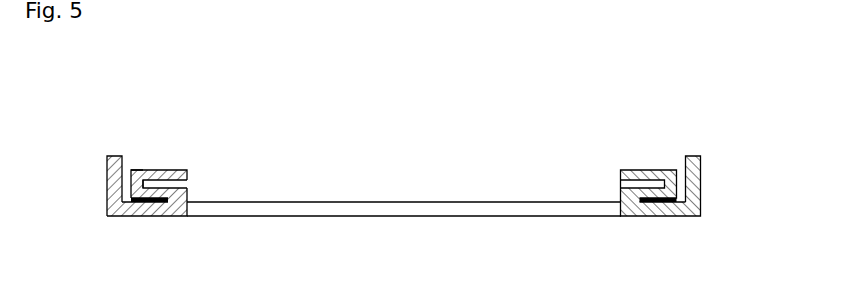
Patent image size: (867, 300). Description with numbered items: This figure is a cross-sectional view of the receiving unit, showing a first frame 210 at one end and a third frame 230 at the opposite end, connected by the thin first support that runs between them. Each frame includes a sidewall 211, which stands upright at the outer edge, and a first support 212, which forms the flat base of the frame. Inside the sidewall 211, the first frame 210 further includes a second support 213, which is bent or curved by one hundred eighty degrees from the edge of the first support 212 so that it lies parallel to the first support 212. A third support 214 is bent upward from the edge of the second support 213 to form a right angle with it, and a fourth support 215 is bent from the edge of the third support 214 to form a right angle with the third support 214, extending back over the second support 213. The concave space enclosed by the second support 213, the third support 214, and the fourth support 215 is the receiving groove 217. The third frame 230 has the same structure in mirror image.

The first frame 210 is at (107, 120).
The sidewall 211 is at (105, 187).
The first support 212 is at (155, 218).
The second support 213 is at (142, 203).
The third support 214 is at (133, 186).
The fourth support 215 is at (175, 170).
The receiving groove 217 is at (183, 182).
The third frame 230 is at (697, 132).